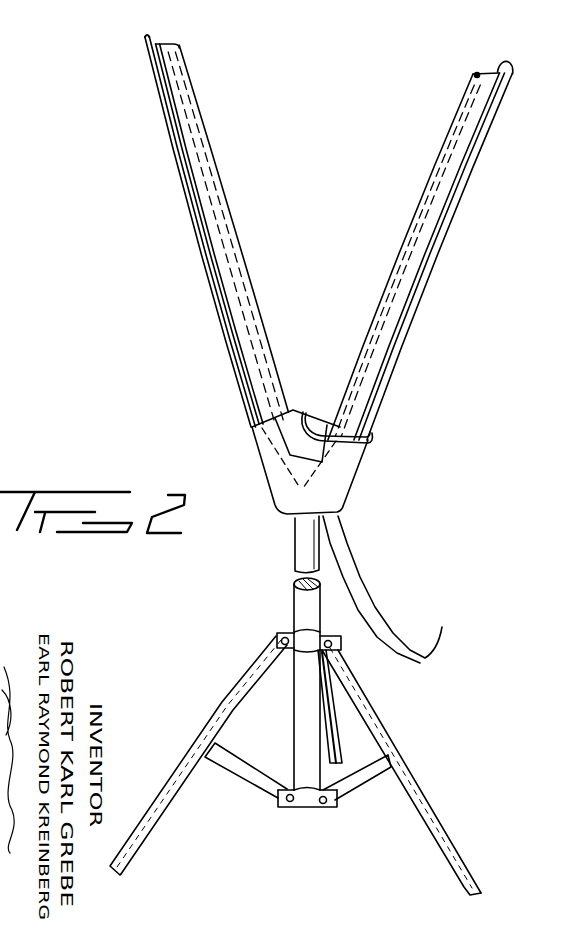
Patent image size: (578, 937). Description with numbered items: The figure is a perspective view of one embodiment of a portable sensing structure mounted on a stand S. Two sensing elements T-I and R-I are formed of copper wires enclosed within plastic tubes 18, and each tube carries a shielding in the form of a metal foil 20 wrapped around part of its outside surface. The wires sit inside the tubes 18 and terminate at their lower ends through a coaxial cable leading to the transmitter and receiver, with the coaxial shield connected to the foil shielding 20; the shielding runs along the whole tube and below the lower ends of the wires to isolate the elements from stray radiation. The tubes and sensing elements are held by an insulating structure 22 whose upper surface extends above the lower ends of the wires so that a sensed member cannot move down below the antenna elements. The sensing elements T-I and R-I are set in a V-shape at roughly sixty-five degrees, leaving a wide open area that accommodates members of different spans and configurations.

The plastic tubes 18 is at (184, 51).
The metal foil shielding 20 is at (146, 38).
The insulating structure 22 is at (306, 428).
The stand S is at (278, 633).
The receiving sensing element R-I is at (190, 126).
The transmitting sensing element T-I is at (460, 200).